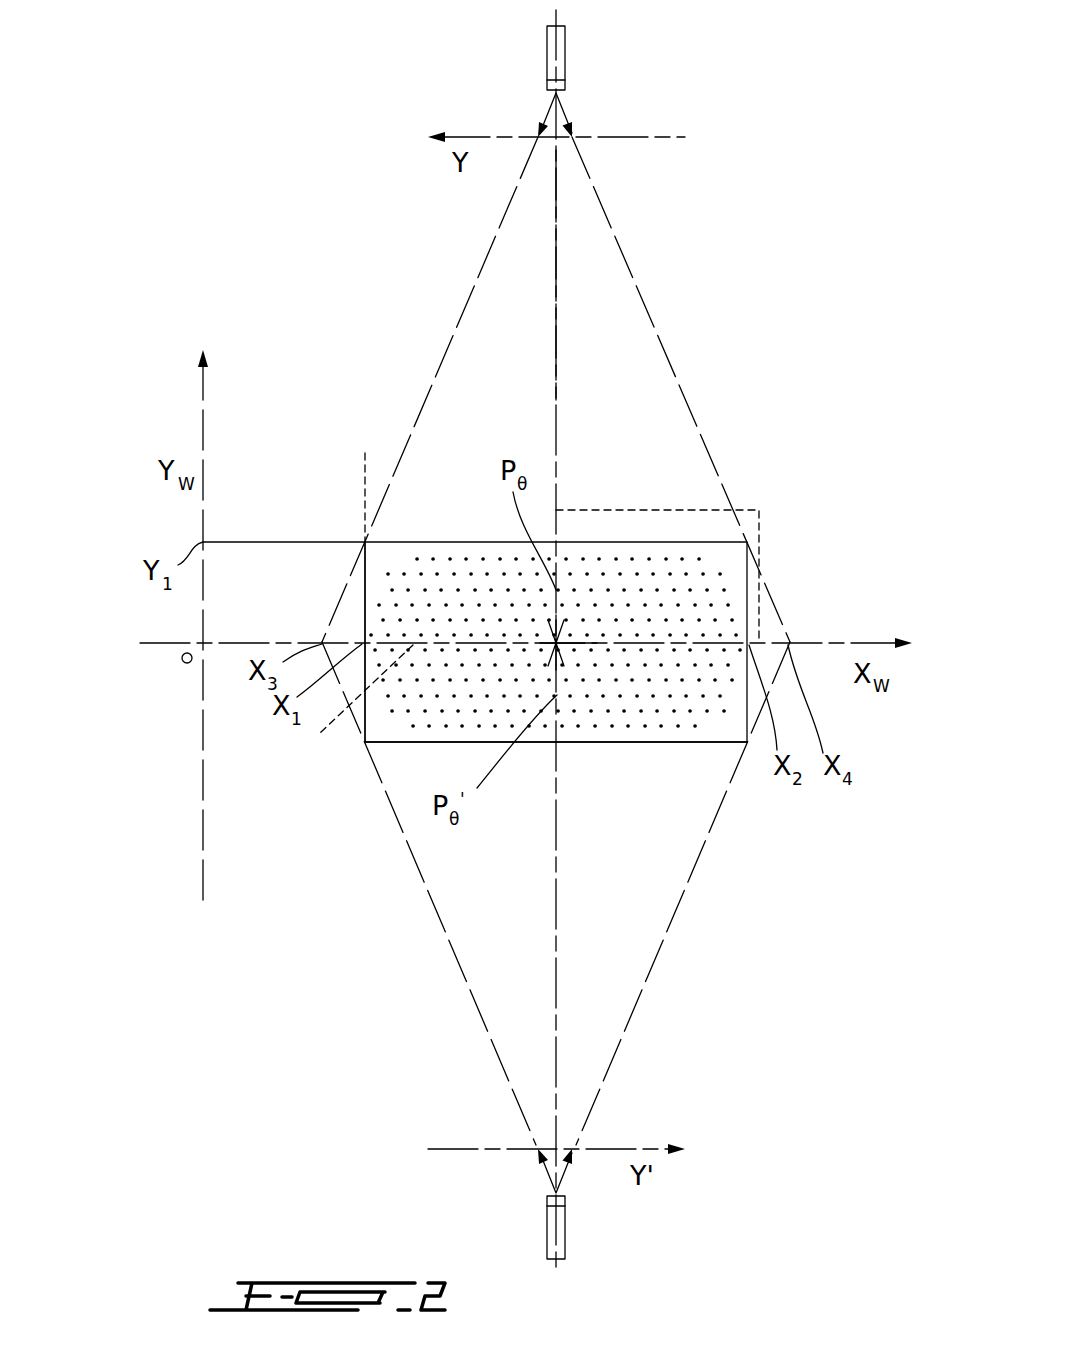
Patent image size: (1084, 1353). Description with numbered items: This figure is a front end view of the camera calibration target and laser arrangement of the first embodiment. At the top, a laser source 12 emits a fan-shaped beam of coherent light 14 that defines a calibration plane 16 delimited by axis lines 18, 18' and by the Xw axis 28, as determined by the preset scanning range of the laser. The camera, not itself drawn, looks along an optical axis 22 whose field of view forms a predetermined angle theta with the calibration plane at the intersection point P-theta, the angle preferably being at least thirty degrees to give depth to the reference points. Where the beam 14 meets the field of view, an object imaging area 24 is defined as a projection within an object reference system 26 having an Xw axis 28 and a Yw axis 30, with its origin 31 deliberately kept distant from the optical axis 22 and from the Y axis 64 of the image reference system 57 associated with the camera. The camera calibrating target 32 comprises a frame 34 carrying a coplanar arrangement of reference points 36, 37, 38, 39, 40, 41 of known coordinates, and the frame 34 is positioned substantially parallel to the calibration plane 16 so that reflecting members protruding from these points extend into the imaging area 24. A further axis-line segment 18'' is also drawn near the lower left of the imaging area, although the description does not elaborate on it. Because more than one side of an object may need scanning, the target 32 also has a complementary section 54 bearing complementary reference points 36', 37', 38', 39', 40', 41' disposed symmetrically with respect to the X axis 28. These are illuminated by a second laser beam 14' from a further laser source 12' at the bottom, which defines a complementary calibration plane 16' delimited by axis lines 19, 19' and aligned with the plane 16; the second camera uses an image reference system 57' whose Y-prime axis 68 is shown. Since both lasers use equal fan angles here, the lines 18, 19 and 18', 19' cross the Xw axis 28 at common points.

The laser source 12 is at (597, 49).
The laser beam 14 is at (601, 103).
The image reference system 57 is at (491, 72).
The Y axis 64 is at (625, 140).
The optical axis 22 is at (556, 273).
The calibration plane 16 is at (681, 389).
The axis line 18' is at (764, 405).
The axis line 18 is at (428, 389).
The Yw axis 30 is at (203, 390).
The object reference system 26 is at (224, 456).
The object imaging area 24 is at (345, 525).
The frame 34 is at (477, 540).
The camera calibrating target 32 is at (428, 535).
The reference point 36 is at (678, 511).
The reference point 37 is at (745, 523).
The reference point 38 is at (763, 555).
The reference point 39 is at (769, 610).
The reference point 40 is at (340, 590).
The reference point 41 is at (335, 618).
The origin 31 is at (205, 645).
The beam boundary segment 18'' is at (349, 703).
The Xw axis 28 is at (823, 645).
The complementary section 54 is at (402, 742).
The axis line 19 is at (429, 893).
The axis line 19' is at (683, 893).
The complementary calibration plane 16' is at (629, 1047).
The image reference system 57' is at (460, 1092).
The Y' axis 68 is at (503, 1157).
The second laser beam 14' is at (586, 1194).
The further laser source 12' is at (592, 1242).
The complementary reference point 41' is at (535, 728).
The complementary reference point 40' is at (576, 765).
The complementary reference point 39' is at (589, 755).
The complementary reference point 38' is at (622, 744).
The complementary reference point 37' is at (647, 771).
The complementary reference point 36' is at (673, 753).